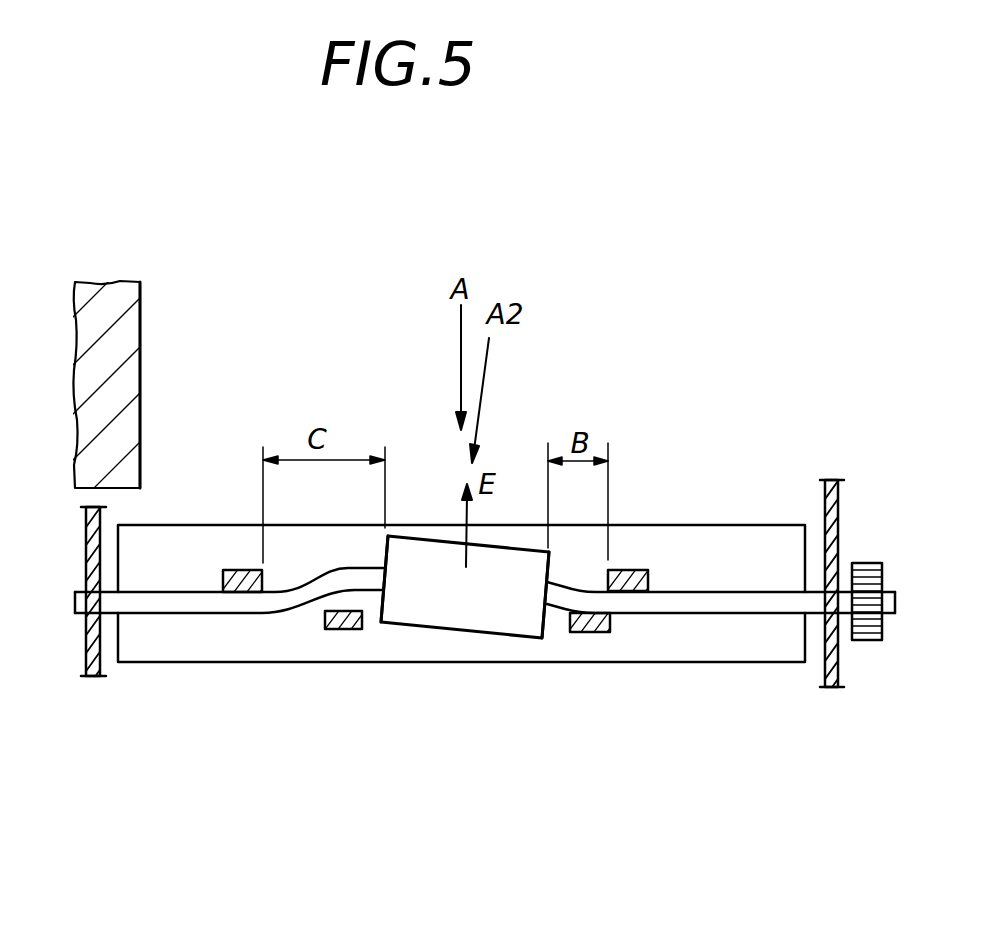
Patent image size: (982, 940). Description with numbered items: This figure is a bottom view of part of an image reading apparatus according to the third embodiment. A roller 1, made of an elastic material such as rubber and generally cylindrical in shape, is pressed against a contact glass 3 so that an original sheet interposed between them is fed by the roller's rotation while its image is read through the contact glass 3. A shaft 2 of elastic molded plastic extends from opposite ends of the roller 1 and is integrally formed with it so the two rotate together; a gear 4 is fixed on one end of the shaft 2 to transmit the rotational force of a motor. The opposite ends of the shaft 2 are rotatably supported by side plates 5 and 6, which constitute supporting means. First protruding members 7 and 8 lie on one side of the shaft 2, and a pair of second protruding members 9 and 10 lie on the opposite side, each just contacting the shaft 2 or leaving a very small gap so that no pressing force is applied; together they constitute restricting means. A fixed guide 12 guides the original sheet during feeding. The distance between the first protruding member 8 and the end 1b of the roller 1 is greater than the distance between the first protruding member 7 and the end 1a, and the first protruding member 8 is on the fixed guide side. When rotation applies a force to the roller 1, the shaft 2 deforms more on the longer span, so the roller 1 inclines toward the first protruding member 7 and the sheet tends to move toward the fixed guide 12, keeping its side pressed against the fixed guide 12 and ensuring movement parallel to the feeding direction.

The roller 1 is at (490, 617).
The end of the roller 1a is at (550, 628).
The end of the roller 1b is at (374, 622).
The shaft 2 is at (168, 592).
The contact glass 3 is at (667, 643).
The gear 4 is at (868, 563).
The side plate 5 is at (838, 502).
The side plate 6 is at (85, 659).
The first protruding member 7 is at (635, 568).
The first protruding member 8 is at (242, 568).
The second protruding member 9 is at (592, 634).
The second protruding member 10 is at (336, 631).
The fixed guide 12 is at (142, 350).